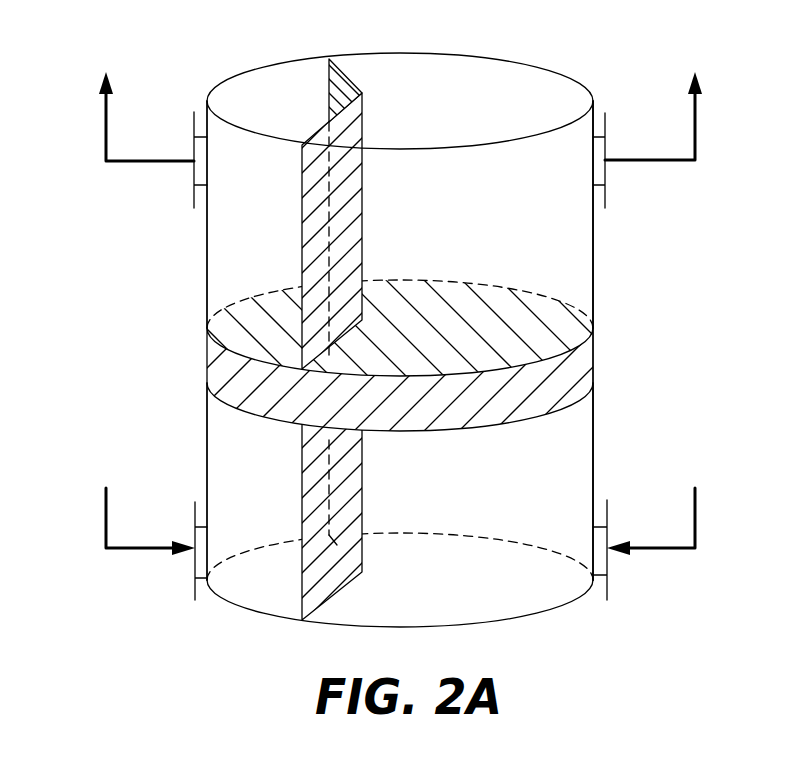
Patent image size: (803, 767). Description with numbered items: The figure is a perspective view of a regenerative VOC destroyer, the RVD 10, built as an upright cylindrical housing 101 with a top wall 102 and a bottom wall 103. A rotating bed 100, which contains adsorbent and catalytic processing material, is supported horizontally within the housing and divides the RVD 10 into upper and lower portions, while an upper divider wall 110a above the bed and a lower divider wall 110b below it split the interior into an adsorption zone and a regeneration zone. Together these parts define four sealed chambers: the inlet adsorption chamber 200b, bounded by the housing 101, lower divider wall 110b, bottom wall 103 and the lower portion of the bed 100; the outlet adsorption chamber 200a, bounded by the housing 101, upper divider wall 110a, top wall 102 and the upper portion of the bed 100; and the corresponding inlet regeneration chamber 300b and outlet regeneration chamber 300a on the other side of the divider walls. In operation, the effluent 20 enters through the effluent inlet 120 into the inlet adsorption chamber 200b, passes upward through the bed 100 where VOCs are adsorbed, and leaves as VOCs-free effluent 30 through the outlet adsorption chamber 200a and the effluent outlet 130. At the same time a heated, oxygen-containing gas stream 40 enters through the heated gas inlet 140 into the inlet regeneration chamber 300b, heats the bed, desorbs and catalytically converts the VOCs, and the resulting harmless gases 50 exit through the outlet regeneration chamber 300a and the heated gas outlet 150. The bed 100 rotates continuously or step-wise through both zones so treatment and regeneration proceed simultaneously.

The RVD 10 is at (120, 231).
The effluent 20 is at (697, 508).
The VOCs-free effluent 30 is at (695, 120).
The heated, oxygen-containing gas stream 40 is at (106, 510).
The harmless gases 50 is at (105, 110).
The bed 100 is at (614, 362).
The housing 101 is at (593, 247).
The top wall 102 is at (440, 80).
The bottom wall 103 is at (530, 582).
The upper divider wall 110a is at (310, 228).
The lower divider wall 110b is at (312, 463).
The effluent inlet 120 is at (607, 505).
The effluent outlet 130 is at (607, 203).
The heated gas inlet 140 is at (195, 572).
The heated gas outlet 150 is at (194, 150).
The outlet adsorption chamber 200a is at (512, 196).
The inlet adsorption chamber 200b is at (520, 492).
The outlet regeneration chamber 300a is at (287, 189).
The inlet regeneration chamber 300b is at (280, 507).